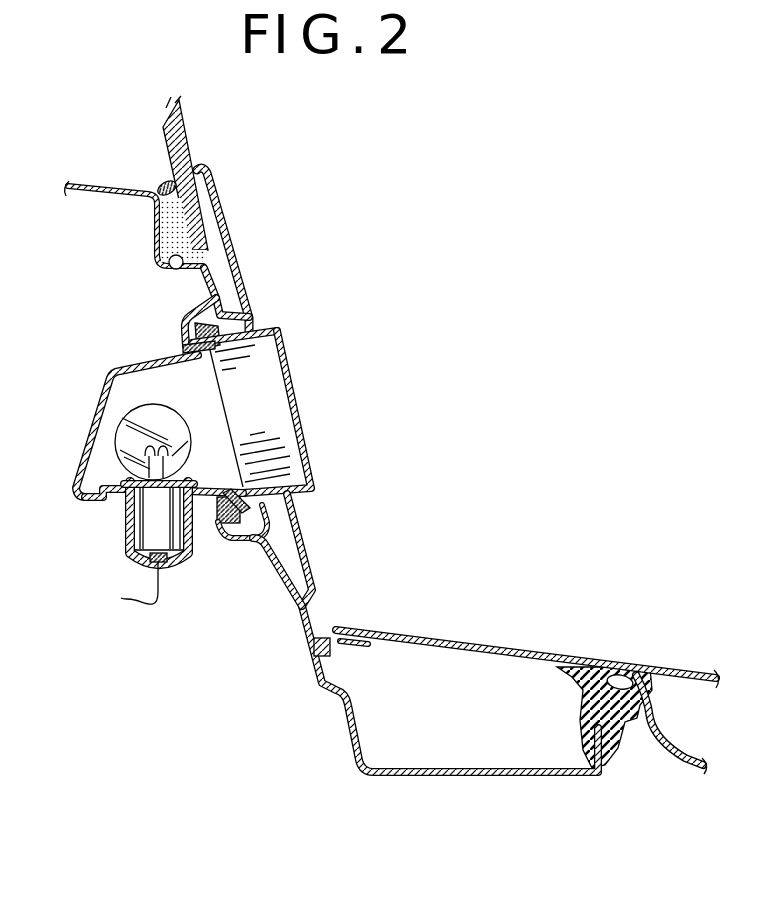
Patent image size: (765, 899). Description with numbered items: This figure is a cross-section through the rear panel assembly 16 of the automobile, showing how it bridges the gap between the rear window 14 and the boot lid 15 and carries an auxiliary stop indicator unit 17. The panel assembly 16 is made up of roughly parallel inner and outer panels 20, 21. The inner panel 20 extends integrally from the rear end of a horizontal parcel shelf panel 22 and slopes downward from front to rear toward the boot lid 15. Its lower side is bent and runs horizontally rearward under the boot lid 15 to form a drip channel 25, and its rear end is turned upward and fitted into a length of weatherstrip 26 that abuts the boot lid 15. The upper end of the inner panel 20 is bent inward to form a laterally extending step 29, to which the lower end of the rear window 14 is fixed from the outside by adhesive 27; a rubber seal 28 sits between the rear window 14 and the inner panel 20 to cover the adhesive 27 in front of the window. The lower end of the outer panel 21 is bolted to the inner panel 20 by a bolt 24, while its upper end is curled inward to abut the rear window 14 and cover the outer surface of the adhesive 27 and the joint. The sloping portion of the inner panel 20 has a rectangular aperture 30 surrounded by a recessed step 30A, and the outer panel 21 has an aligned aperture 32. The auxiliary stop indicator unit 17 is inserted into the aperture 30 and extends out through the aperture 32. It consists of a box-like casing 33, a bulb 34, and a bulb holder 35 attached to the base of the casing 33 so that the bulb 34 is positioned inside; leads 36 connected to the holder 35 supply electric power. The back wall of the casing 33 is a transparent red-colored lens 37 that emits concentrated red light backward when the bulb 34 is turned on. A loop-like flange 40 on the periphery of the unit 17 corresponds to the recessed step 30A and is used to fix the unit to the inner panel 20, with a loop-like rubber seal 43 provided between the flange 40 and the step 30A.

The rear window 14 is at (170, 128).
The boot lid 15 is at (632, 665).
The panel assembly 16 is at (220, 254).
The auxiliary stop indicator unit 17 is at (136, 451).
The inner panel 20 is at (180, 322).
The outer panel 21 is at (207, 197).
The parcel shelf panel 22 is at (101, 185).
The bolt 24 is at (323, 640).
The drip channel 25 is at (460, 778).
The weatherstrip 26 is at (595, 705).
The adhesive 27 is at (173, 233).
The rubber seal 28 is at (165, 182).
The step 29 is at (172, 265).
The aperture 30 is at (186, 348).
The recessed step 30A is at (222, 535).
The aperture 32 is at (257, 330).
The casing 33 is at (92, 421).
The bulb 34 is at (127, 443).
The bulb holder 35 is at (150, 520).
The leads 36 is at (161, 606).
The lens 37 is at (297, 404).
The flange 40 is at (265, 536).
The rubber seal 43 is at (194, 323).